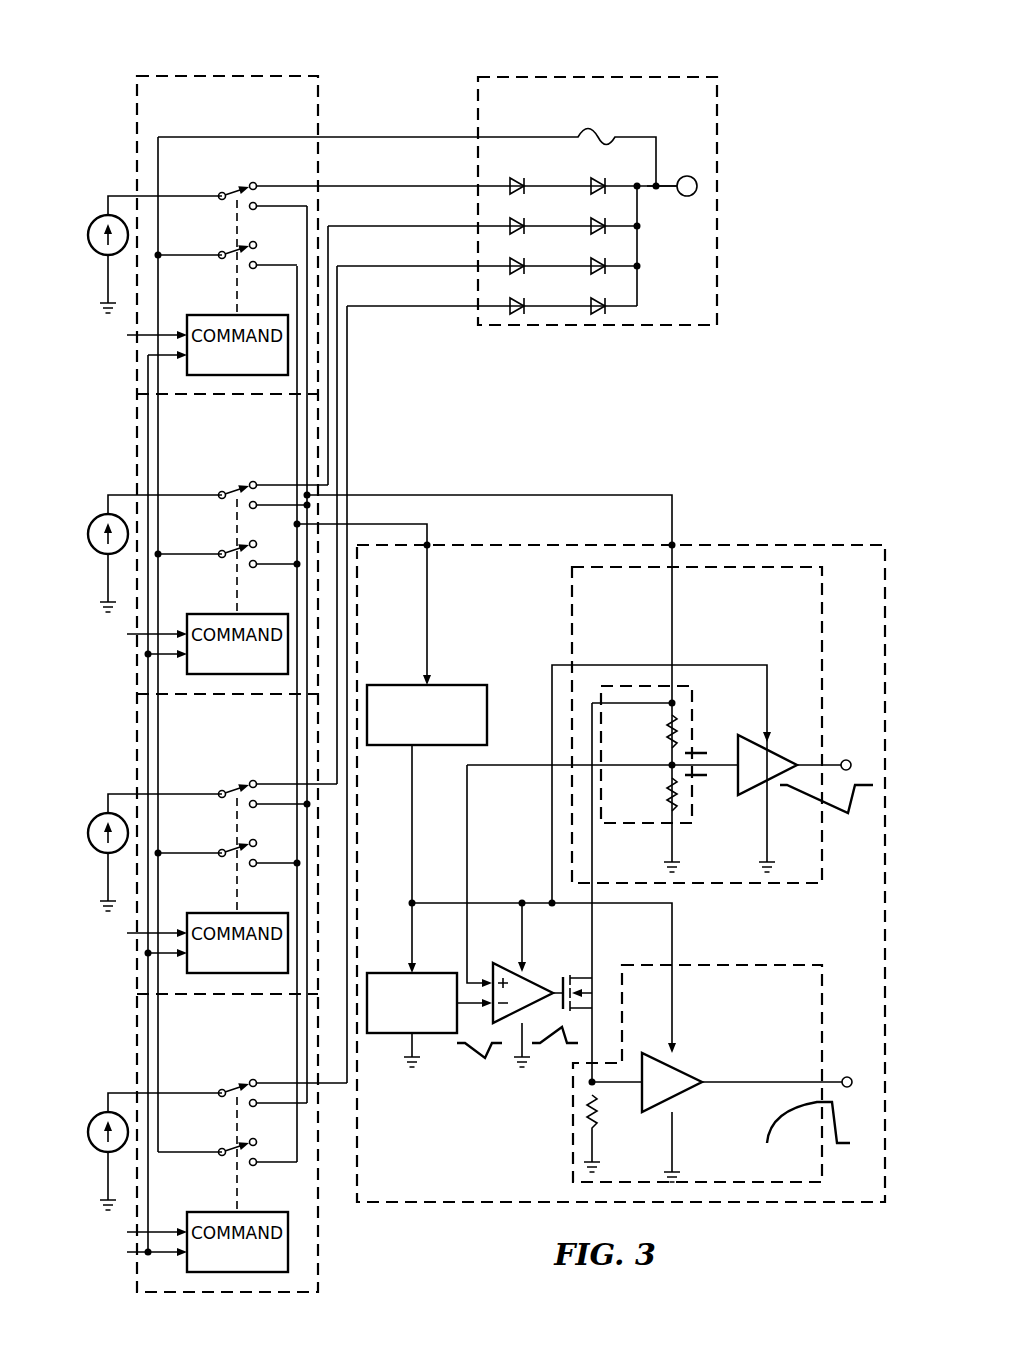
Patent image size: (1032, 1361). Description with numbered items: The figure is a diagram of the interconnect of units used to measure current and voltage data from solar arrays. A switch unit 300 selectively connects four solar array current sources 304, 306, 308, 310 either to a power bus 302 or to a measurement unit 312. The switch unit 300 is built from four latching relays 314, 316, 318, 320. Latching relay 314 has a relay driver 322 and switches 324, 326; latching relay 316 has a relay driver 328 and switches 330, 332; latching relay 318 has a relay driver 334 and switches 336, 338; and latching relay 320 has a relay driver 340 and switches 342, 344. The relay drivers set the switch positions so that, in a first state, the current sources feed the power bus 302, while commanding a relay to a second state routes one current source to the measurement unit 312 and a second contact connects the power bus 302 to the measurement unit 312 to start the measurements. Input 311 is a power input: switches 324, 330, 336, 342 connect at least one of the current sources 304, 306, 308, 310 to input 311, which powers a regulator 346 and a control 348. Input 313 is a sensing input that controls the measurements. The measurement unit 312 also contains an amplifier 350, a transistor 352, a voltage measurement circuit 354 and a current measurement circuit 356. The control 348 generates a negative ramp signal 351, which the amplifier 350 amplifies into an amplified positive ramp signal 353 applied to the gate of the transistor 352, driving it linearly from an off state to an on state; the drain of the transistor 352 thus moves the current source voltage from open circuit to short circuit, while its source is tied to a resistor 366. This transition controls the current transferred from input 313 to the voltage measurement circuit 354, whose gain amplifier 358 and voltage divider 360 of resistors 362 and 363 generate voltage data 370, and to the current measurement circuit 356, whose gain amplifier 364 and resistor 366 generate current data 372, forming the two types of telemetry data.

The switch unit 300 is at (212, 72).
The power bus 302 is at (724, 132).
The current source 304 is at (95, 219).
The current source 306 is at (95, 518).
The current source 308 is at (95, 817).
The current source 310 is at (95, 1116).
The input 311 is at (432, 552).
The measurement unit 312 is at (432, 1212).
The input 313 is at (675, 540).
The latching relay 314 is at (212, 117).
The latching relay 316 is at (212, 430).
The latching relay 318 is at (212, 728).
The latching relay 320 is at (212, 1027).
The relay driver 322 is at (205, 312).
The switch 324 is at (220, 247).
The switch 326 is at (226, 186).
The relay driver 328 is at (205, 611).
The switch 330 is at (220, 546).
The switch 332 is at (226, 485).
The relay driver 334 is at (205, 910).
The switch 336 is at (220, 845).
The switch 338 is at (226, 784).
The relay driver 340 is at (205, 1208).
The switch 342 is at (220, 1143).
The switch 344 is at (226, 1082).
The regulator 346 is at (455, 683).
The control 348 is at (395, 971).
The amplifier 350 is at (500, 961).
The negative ramp signal 351 is at (472, 1055).
The transistor 352 is at (562, 965).
The amplified positive ramp signal 353 is at (560, 1047).
The voltage measurement circuit 354 is at (607, 623).
The current measurement circuit 356 is at (760, 955).
The amplifier 358 is at (732, 780).
The voltage divider 360 is at (700, 749).
The resistor 362 is at (664, 737).
The resistor 363 is at (664, 800).
The amplifier 364 is at (688, 1094).
The resistor 366 is at (602, 1118).
The voltage data 370 is at (838, 816).
The current data 372 is at (843, 1147).